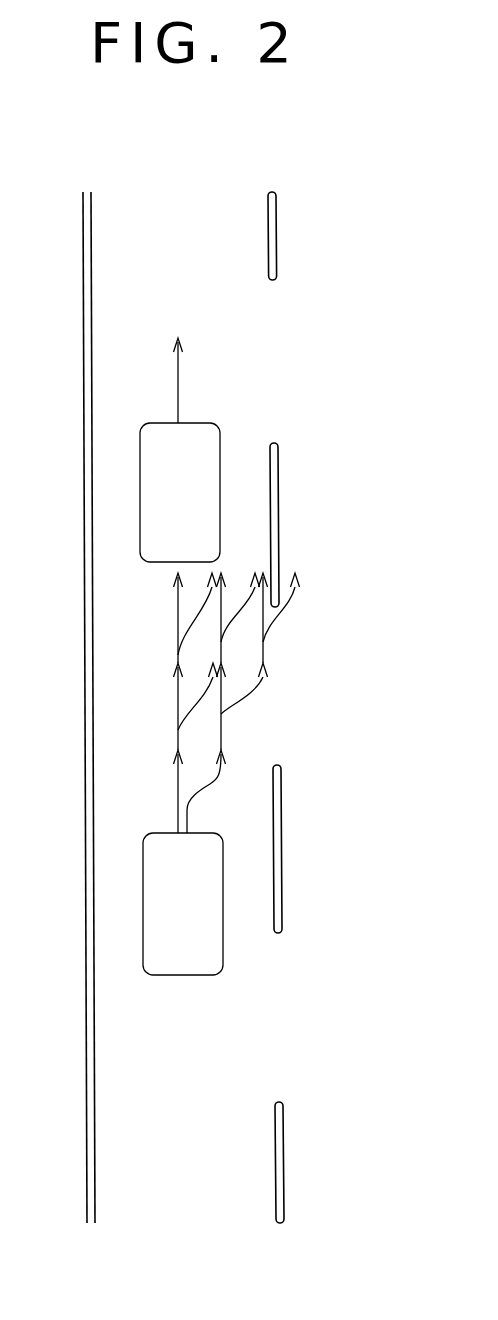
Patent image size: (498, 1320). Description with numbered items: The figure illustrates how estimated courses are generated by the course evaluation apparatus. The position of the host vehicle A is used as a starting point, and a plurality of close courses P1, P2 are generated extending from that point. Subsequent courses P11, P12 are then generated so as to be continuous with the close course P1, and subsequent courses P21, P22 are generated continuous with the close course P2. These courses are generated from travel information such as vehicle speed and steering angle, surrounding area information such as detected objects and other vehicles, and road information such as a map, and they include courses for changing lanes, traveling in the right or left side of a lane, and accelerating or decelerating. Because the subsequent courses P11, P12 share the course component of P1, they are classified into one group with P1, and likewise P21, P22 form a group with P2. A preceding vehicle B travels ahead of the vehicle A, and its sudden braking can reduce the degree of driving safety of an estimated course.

The vehicle A is at (143, 908).
The preceding vehicle B is at (140, 477).
The close course P1 is at (178, 790).
The close course P2 is at (216, 782).
The subsequent course P11 is at (177, 698).
The subsequent course P12 is at (210, 717).
The subsequent course P21 is at (224, 691).
The subsequent course P22 is at (252, 695).